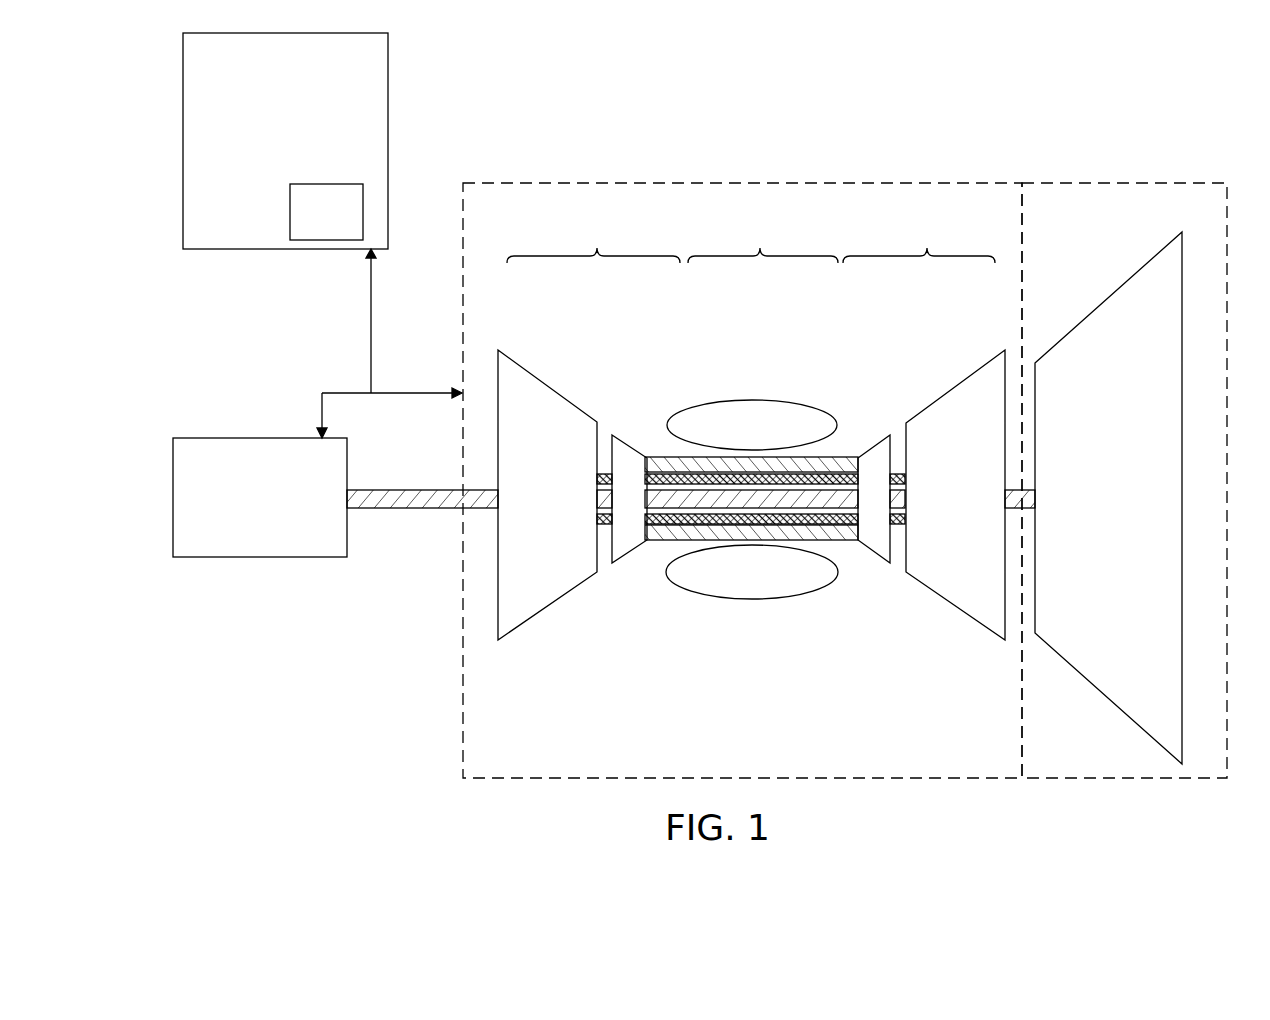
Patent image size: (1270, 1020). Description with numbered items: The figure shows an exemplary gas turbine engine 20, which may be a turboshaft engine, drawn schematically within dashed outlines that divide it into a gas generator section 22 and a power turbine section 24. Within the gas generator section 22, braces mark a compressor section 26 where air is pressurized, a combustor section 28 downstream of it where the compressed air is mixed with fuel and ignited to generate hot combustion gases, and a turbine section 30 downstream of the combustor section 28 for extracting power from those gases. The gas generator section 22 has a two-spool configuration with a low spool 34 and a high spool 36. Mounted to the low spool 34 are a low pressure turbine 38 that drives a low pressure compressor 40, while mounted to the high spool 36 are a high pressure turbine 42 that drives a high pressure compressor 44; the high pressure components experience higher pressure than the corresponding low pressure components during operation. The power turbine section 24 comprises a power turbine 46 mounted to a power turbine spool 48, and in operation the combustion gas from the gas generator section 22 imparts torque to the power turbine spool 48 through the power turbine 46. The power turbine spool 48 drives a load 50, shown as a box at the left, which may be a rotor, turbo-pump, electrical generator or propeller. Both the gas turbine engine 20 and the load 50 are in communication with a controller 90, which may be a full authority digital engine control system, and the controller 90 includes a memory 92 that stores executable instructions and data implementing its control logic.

The gas turbine engine 20 is at (1054, 118).
The gas generator section 22 is at (788, 183).
The power turbine section 24 is at (1152, 183).
The compressor section 26 is at (593, 241).
The combustor section 28 is at (763, 241).
The turbine section 30 is at (919, 241).
The low spool 34 is at (600, 472).
The high spool 36 is at (848, 457).
The low pressure turbine 38 is at (955, 386).
The low pressure compressor 40 is at (562, 392).
The high pressure turbine 42 is at (882, 440).
The high pressure compressor 44 is at (633, 450).
The power turbine 46 is at (1090, 312).
The power turbine spool 48 is at (1025, 490).
The load 50 is at (253, 438).
The controller 90 is at (270, 178).
The memory 92 is at (313, 223).